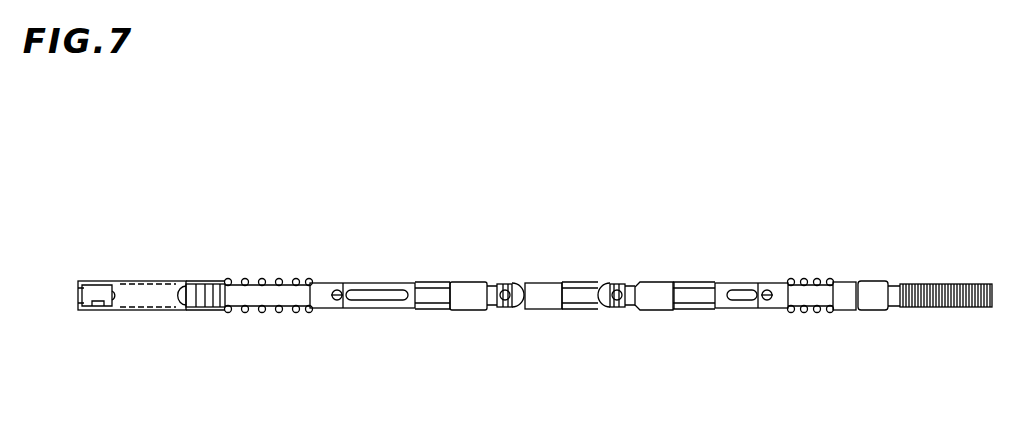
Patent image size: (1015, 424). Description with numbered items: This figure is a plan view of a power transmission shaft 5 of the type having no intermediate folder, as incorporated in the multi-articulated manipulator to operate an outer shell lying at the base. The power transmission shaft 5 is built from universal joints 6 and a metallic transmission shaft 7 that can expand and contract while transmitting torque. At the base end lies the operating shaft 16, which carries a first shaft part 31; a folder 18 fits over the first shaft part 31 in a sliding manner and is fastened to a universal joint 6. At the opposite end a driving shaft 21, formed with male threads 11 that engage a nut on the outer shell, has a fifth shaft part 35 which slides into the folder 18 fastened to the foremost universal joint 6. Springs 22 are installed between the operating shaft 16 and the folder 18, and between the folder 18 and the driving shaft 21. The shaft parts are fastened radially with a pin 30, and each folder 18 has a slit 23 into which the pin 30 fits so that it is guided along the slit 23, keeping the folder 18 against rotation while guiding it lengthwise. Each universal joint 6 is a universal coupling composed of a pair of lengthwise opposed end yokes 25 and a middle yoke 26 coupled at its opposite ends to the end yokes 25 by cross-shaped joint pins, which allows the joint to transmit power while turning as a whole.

The power transmission shaft 5 is at (503, 264).
The universal joint 6 is at (580, 282).
The transmission shaft 7 is at (332, 310).
The male threads 11 is at (953, 283).
The operating shaft 16 is at (138, 283).
The folder 18 is at (413, 310).
The driving shaft 21 is at (870, 281).
The spring 22 is at (261, 282).
The slit 23 is at (374, 300).
The end yoke 25 is at (472, 312).
The middle yoke 26 is at (536, 312).
The pin 30 is at (340, 284).
The first shaft part 31 is at (262, 309).
The fifth shaft part 35 is at (818, 312).